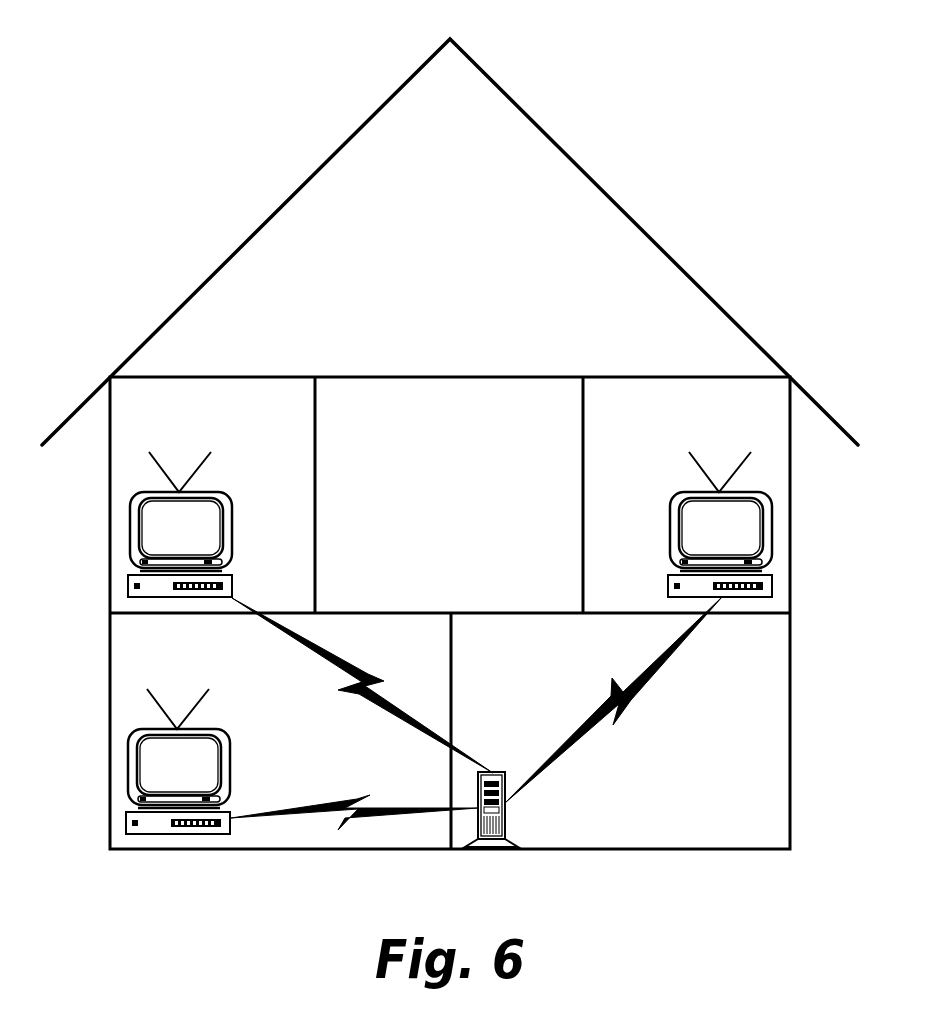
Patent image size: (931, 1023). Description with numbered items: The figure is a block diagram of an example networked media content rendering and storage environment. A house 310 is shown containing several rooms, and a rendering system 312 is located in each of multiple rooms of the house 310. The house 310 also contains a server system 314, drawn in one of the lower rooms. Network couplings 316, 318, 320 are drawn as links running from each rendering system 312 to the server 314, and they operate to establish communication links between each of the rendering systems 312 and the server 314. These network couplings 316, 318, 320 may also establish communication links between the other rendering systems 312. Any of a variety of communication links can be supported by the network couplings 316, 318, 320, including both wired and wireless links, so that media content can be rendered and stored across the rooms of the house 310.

The house 310 is at (313, 33).
The rendering system 312 is at (213, 495).
The server system 314 is at (505, 816).
The network coupling 316 is at (365, 795).
The network coupling 318 is at (322, 645).
The network coupling 320 is at (668, 652).